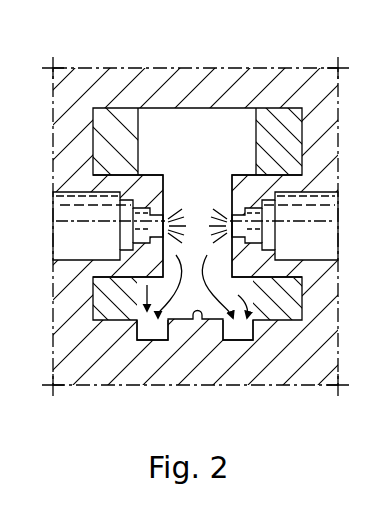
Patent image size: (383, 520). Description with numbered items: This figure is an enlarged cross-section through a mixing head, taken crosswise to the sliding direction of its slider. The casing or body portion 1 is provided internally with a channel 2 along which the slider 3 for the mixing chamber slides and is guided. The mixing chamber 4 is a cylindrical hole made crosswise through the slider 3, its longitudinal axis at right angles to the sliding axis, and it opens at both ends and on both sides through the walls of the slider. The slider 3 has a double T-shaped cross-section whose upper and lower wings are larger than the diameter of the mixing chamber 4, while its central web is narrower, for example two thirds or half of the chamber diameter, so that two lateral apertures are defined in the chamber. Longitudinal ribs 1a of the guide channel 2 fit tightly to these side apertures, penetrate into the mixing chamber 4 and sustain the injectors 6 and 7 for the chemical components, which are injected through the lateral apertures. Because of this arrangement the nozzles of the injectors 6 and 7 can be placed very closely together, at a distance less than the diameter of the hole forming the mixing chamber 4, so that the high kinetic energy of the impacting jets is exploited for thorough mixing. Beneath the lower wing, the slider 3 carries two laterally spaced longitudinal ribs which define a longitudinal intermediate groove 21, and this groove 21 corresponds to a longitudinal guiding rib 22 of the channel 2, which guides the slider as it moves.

The body portion 1 is at (85, 357).
The longitudinal ribs 1a is at (140, 258).
The channel 2 is at (302, 132).
The slider 3 is at (277, 133).
The mixing chamber 4 is at (205, 142).
The injector 6 is at (80, 233).
The injector 7 is at (308, 238).
The longitudinal intermediate groove 21 is at (203, 320).
The longitudinal guiding rib 22 is at (180, 333).